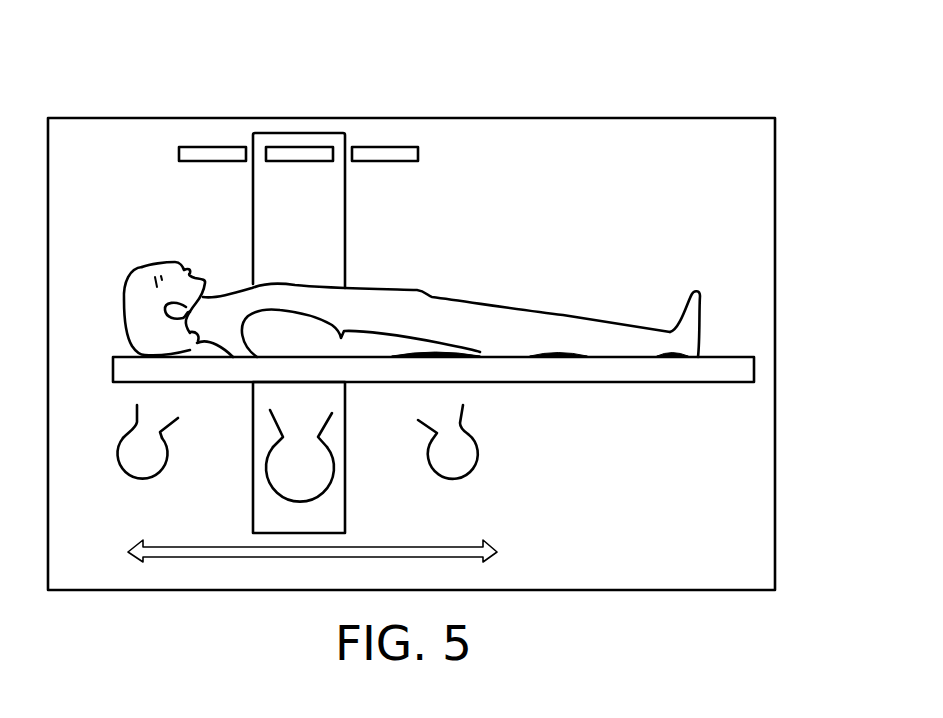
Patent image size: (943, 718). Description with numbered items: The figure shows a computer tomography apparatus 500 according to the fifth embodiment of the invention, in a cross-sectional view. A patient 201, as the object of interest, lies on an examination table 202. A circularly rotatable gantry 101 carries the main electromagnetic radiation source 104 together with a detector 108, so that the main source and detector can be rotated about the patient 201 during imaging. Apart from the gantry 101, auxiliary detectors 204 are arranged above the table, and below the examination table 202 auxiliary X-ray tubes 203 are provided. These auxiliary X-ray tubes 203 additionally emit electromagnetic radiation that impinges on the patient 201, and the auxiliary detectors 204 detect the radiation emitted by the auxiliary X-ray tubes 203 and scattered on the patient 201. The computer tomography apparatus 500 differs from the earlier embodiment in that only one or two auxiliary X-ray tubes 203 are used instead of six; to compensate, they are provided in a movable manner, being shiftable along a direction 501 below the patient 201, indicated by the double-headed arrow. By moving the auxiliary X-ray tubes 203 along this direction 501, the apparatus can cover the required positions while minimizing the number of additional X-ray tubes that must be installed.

The computer tomography apparatus 500 is at (725, 89).
The gantry 101 is at (268, 138).
The detector 108 is at (301, 152).
The auxiliary detectors 204 is at (212, 152).
The examination table 202 is at (672, 368).
The patient 201 is at (603, 330).
The main electromagnetic radiation source 104 is at (323, 465).
The auxiliary X-ray tubes 203 is at (143, 465).
The direction 501 is at (400, 550).